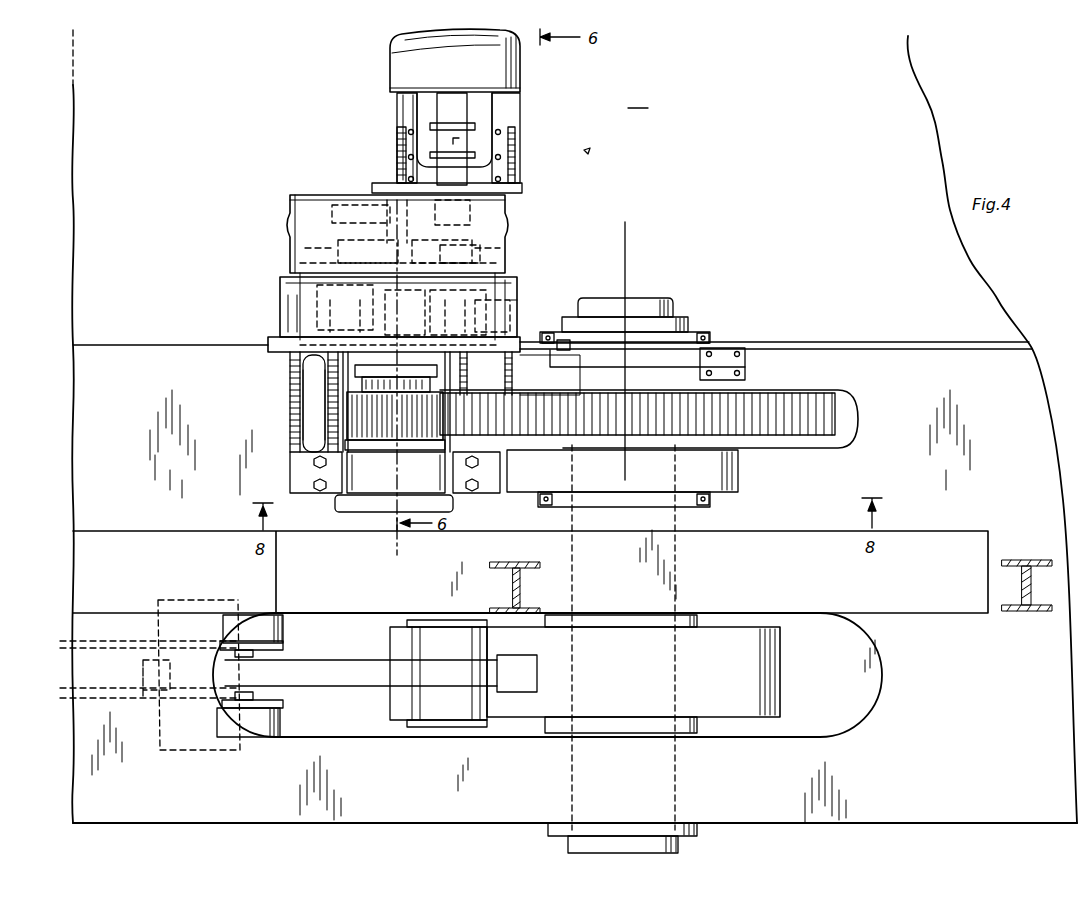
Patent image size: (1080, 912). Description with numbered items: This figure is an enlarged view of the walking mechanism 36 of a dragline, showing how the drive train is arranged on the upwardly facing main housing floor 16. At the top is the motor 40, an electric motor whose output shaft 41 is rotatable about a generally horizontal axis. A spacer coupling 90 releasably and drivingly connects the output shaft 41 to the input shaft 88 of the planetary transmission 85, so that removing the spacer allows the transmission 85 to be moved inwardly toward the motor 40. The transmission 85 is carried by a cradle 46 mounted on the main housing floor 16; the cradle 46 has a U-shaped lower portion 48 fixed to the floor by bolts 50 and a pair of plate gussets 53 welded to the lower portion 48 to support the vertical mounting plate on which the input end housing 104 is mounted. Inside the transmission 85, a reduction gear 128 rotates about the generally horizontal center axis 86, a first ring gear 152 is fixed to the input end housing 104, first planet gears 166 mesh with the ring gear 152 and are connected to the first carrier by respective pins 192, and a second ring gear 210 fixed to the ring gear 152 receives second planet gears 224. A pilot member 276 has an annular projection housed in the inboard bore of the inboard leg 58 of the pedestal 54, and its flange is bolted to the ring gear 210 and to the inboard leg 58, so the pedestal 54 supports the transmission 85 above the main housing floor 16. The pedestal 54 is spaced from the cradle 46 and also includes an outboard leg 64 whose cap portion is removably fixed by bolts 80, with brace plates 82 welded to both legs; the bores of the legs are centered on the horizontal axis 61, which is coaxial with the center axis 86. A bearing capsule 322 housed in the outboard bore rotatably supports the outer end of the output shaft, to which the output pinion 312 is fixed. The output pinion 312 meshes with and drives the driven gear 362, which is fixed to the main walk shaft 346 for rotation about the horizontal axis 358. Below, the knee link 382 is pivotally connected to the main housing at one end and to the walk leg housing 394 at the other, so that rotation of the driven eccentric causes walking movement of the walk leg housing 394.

The motor 40 is at (395, 53).
The output shaft 41 is at (355, 103).
The cradle 46 is at (327, 126).
The bolts 50 is at (400, 151).
The lower portion 48 is at (400, 164).
The plate gussets 53 is at (398, 176).
The spacer coupling 90 is at (486, 141).
The input shaft 88 is at (492, 180).
The main housing floor 16 is at (638, 98).
The walking mechanism 36 is at (590, 149).
The input end housing 104 is at (300, 203).
The reduction gear 128 is at (330, 222).
The planetary transmission 85 is at (222, 238).
The first ring gear 152 is at (290, 250).
The first planet gears 166 is at (505, 242).
The axis 358 is at (626, 262).
The second ring gear 210 is at (280, 294).
The center axis 86 is at (397, 325).
The second planet gears 224 is at (520, 300).
The pilot member 276 is at (270, 340).
The inboard leg 58 is at (273, 356).
The pedestal 54 is at (235, 385).
The brace plates 82 is at (300, 396).
The output pinion 312 is at (355, 421).
The pin 192 is at (432, 388).
The outboard leg 64 is at (292, 470).
The bolts 80 is at (470, 490).
The bearing capsule 322 is at (332, 517).
The axis 61 is at (390, 552).
The driven gear 362 is at (805, 393).
The main walk shaft 346 is at (665, 520).
The knee link 382 is at (332, 668).
The walk leg housing 394 is at (735, 679).